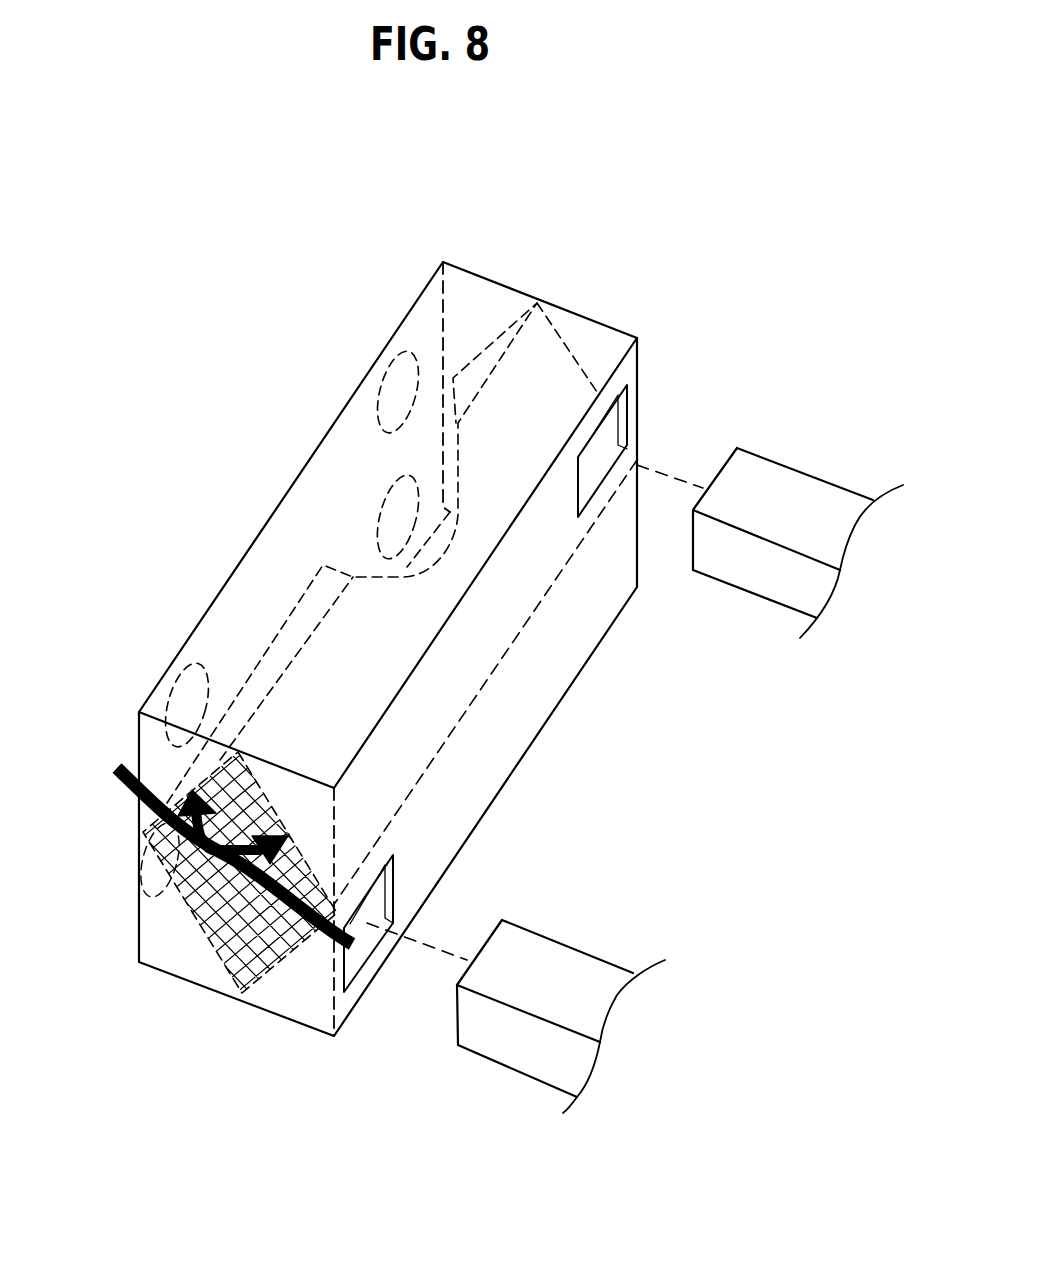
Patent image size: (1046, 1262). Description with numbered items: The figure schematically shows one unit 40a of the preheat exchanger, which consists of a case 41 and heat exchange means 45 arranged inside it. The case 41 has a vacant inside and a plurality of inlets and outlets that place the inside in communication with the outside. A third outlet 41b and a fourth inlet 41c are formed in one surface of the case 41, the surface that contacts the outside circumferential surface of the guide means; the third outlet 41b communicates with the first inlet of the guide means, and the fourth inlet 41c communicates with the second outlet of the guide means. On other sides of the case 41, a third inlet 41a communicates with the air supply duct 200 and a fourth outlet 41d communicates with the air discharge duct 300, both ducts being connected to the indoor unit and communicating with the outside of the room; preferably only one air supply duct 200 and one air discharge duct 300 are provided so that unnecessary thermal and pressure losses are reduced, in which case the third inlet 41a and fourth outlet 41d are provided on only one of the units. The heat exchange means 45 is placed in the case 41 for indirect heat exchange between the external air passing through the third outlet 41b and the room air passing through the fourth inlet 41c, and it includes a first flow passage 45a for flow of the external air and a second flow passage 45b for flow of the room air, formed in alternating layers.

The unit of the preheat exchanger 40a is at (189, 314).
The case 41 is at (497, 279).
The third inlet 41a is at (370, 908).
The third outlet 41b is at (396, 386).
The fourth inlet 41c is at (390, 523).
The fourth outlet 41d is at (608, 435).
The heat exchange means 45 is at (240, 882).
The first flow passage 45a is at (327, 928).
The second flow passage 45b is at (117, 803).
The air supply duct 200 is at (565, 960).
The air discharge duct 300 is at (803, 487).